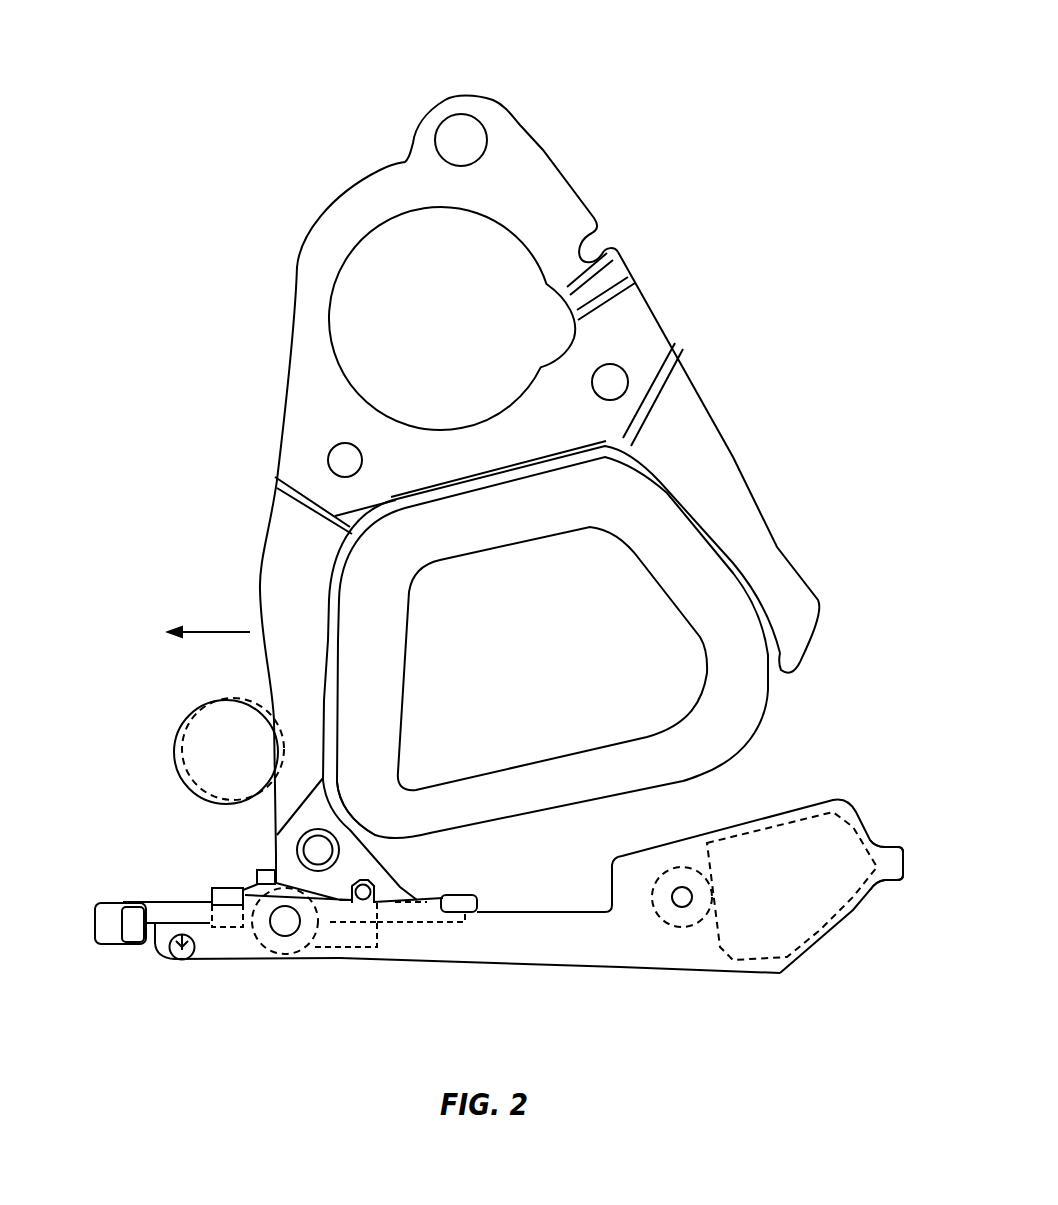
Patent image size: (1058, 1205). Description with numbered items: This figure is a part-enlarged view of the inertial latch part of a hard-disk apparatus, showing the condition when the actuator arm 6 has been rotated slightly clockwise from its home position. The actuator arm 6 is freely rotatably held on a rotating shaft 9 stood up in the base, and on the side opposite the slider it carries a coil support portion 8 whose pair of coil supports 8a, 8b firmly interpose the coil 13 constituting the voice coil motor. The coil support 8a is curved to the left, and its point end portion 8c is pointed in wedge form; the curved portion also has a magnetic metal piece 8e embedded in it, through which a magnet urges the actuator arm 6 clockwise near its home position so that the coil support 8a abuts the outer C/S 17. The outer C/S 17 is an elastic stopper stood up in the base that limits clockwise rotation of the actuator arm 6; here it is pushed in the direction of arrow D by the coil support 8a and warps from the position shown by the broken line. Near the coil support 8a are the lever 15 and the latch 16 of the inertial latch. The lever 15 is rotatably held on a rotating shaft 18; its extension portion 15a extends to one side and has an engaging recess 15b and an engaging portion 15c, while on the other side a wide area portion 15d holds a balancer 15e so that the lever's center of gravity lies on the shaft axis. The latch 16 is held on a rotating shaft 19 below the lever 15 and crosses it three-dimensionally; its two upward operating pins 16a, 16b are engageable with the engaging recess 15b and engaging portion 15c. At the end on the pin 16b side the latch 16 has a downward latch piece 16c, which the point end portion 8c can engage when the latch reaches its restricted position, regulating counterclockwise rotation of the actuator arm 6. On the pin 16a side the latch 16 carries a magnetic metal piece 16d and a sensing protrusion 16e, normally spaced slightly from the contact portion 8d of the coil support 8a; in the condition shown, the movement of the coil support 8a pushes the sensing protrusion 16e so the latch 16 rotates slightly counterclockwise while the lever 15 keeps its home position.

The actuator arm 6 is at (338, 122).
The coil support portion 8 is at (643, 320).
The coil support 8a is at (280, 575).
The coil support 8b is at (727, 480).
The point end portion 8c is at (397, 891).
The contact portion 8d is at (275, 852).
The magnetic metal piece 8e is at (318, 849).
The rotating shaft 9 is at (476, 242).
The coil 13 is at (735, 708).
The lever 15 is at (567, 955).
The extension portion 15a is at (450, 944).
The engaging recess 15b is at (123, 902).
The engaging portion 15c is at (340, 903).
The wide area portion 15d is at (783, 823).
The balancer 15e is at (853, 827).
The latch 16 is at (223, 960).
The operating pin 16a is at (180, 950).
The operating pin 16b is at (368, 878).
The latch piece 16c is at (478, 908).
The magnetic metal piece 16d is at (213, 893).
The sensing protrusion 16e is at (268, 878).
The outer C/S 17 is at (205, 735).
The rotating shaft 18 is at (683, 910).
The rotating shaft 19 is at (288, 934).